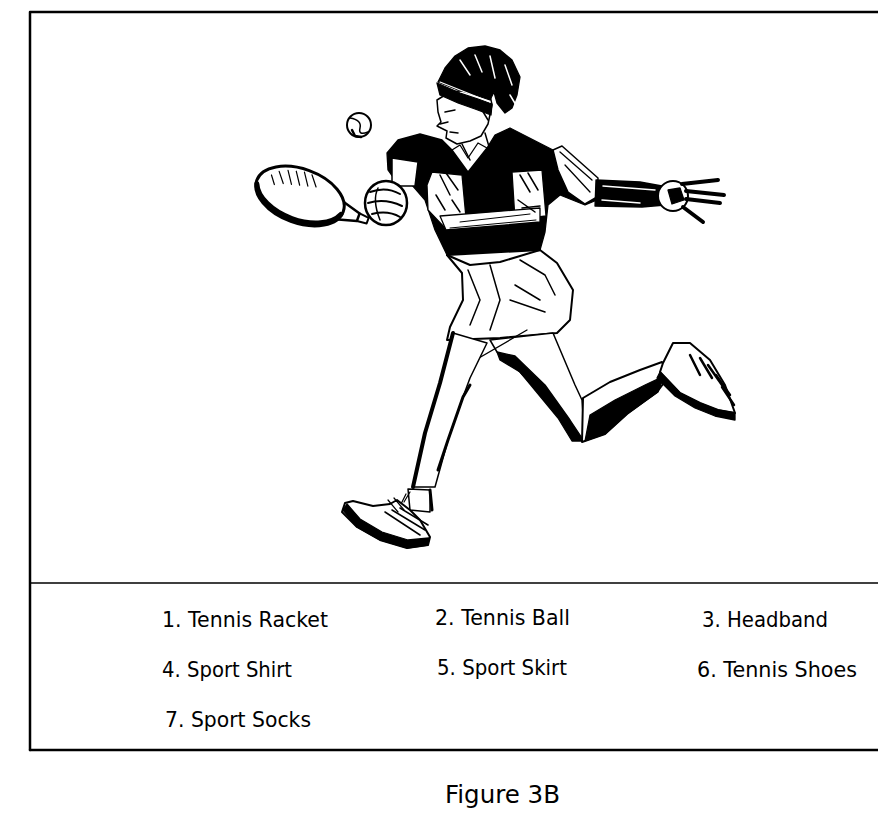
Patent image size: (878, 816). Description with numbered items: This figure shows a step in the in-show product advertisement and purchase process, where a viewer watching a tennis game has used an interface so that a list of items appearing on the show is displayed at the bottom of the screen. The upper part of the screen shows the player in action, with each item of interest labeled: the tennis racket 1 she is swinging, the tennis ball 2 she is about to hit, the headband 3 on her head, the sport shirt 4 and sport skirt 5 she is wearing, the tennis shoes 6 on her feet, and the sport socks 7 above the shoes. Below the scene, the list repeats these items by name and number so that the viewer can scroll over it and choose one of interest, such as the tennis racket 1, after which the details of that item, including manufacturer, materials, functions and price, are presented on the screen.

The tennis racket 1 is at (262, 170).
The tennis ball 2 is at (348, 115).
The headband 3 is at (438, 68).
The sport shirt 4 is at (585, 180).
The sport skirt 5 is at (570, 293).
The tennis shoes 6 is at (703, 362).
The sport socks 7 is at (400, 490).